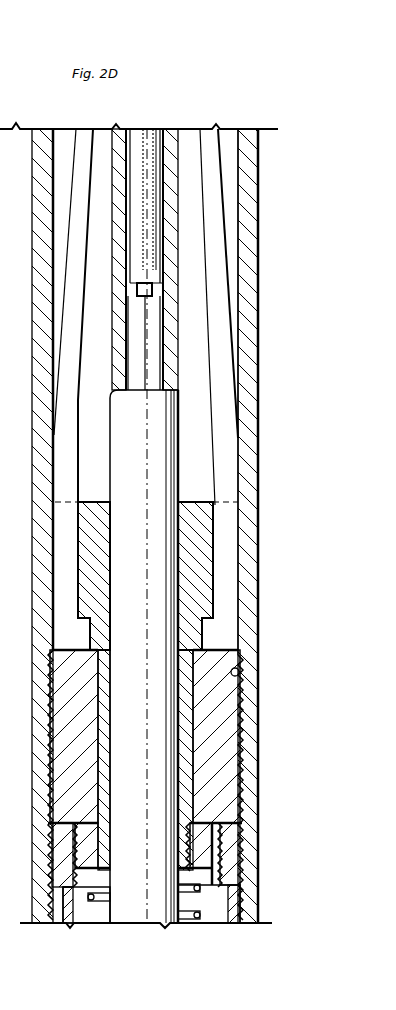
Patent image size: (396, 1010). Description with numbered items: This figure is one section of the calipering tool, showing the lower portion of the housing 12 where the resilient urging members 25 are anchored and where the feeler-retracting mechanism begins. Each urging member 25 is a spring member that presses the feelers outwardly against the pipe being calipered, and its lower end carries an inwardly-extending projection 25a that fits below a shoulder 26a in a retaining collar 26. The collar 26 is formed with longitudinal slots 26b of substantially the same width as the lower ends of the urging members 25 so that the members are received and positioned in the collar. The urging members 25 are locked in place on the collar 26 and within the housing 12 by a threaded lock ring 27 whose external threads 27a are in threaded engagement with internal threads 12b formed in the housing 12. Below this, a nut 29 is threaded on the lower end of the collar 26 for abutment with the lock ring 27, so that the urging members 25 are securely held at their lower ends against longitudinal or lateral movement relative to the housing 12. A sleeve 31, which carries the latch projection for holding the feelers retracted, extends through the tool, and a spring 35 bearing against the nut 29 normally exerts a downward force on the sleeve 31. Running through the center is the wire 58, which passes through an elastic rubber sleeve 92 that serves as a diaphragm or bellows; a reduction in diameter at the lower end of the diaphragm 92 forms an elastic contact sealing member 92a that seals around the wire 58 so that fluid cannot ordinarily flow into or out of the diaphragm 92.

The housing 12 is at (255, 153).
The internal threads 12b is at (250, 664).
The resilient urging member 25 is at (230, 257).
The inwardly-extending projection 25a is at (205, 632).
The retaining collar 26 is at (205, 542).
The shoulder 26a is at (212, 622).
The longitudinal slot 26b is at (228, 506).
The threaded lock ring 27 is at (232, 703).
The external threads 27a is at (255, 738).
The nut 29 is at (210, 838).
The sleeve 31 is at (178, 192).
The spring 35 is at (192, 916).
The wire 58 is at (165, 313).
The diaphragm sleeve 92 is at (163, 217).
The elastic contact sealing member 92a is at (165, 290).